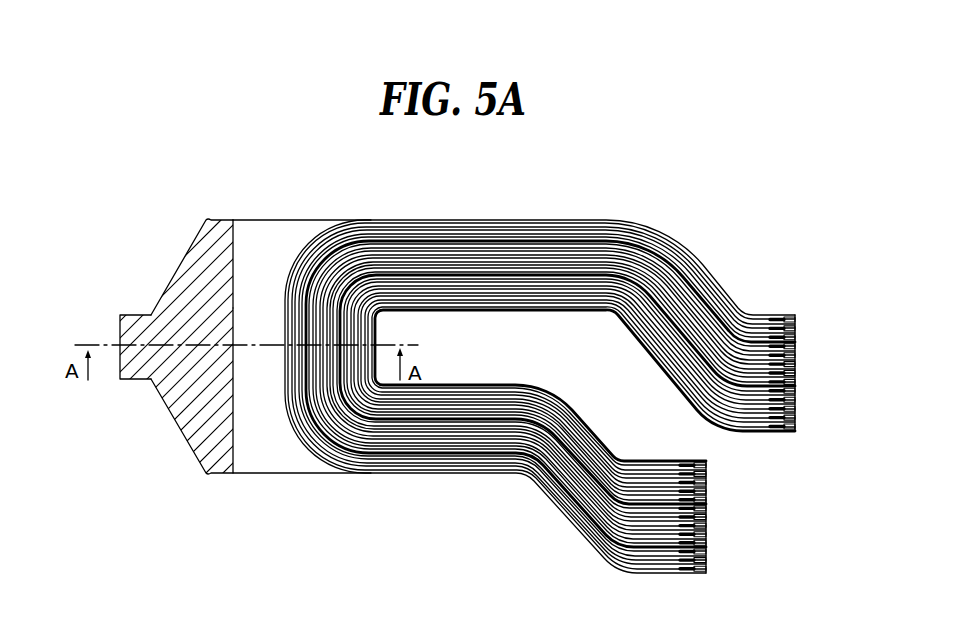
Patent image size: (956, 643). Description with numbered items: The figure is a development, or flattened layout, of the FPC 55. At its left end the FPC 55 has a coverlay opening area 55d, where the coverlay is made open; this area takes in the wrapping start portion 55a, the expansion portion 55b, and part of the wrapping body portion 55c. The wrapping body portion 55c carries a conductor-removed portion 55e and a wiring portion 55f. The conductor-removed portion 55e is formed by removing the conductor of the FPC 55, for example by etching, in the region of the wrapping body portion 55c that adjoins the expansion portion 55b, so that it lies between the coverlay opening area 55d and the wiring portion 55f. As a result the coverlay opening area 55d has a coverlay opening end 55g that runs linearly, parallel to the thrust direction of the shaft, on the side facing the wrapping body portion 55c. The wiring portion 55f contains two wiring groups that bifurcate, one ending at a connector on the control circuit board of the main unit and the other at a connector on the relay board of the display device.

The FPC 55 is at (540, 360).
The wrapping start portion 55a is at (112, 323).
The expansion portion 55b is at (160, 278).
The wrapping body portion 55c is at (270, 212).
The coverlay opening area 55d is at (183, 407).
The conductor-removed portion 55e is at (246, 451).
The wiring portion 55f is at (317, 445).
The coverlay opening end 55g is at (224, 240).